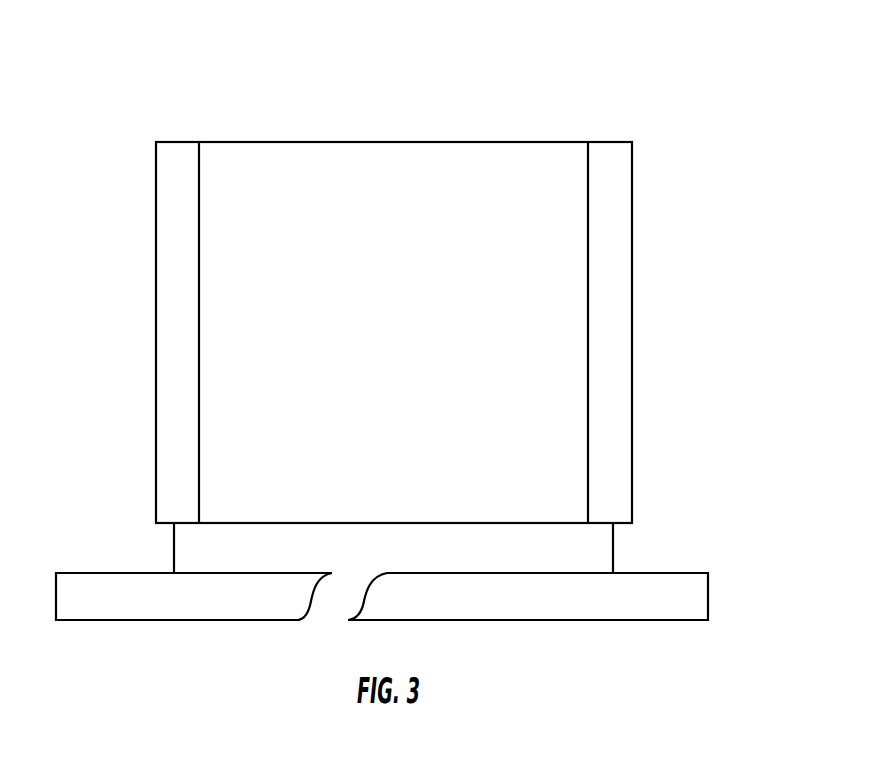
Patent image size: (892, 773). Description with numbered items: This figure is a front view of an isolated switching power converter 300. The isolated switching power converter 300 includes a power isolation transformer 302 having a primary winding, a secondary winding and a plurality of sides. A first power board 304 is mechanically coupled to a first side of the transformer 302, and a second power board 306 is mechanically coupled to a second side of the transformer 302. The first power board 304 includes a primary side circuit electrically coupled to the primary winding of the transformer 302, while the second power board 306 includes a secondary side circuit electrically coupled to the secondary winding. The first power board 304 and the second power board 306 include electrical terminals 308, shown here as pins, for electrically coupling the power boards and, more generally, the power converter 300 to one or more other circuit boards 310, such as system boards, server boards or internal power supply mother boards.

The isolated switching power converter 300 is at (559, 84).
The power isolation transformer 302 is at (367, 141).
The first power board 304 is at (157, 335).
The second power board 306 is at (632, 253).
The electrical terminals 308 is at (173, 549).
The circuit boards 310 is at (708, 598).